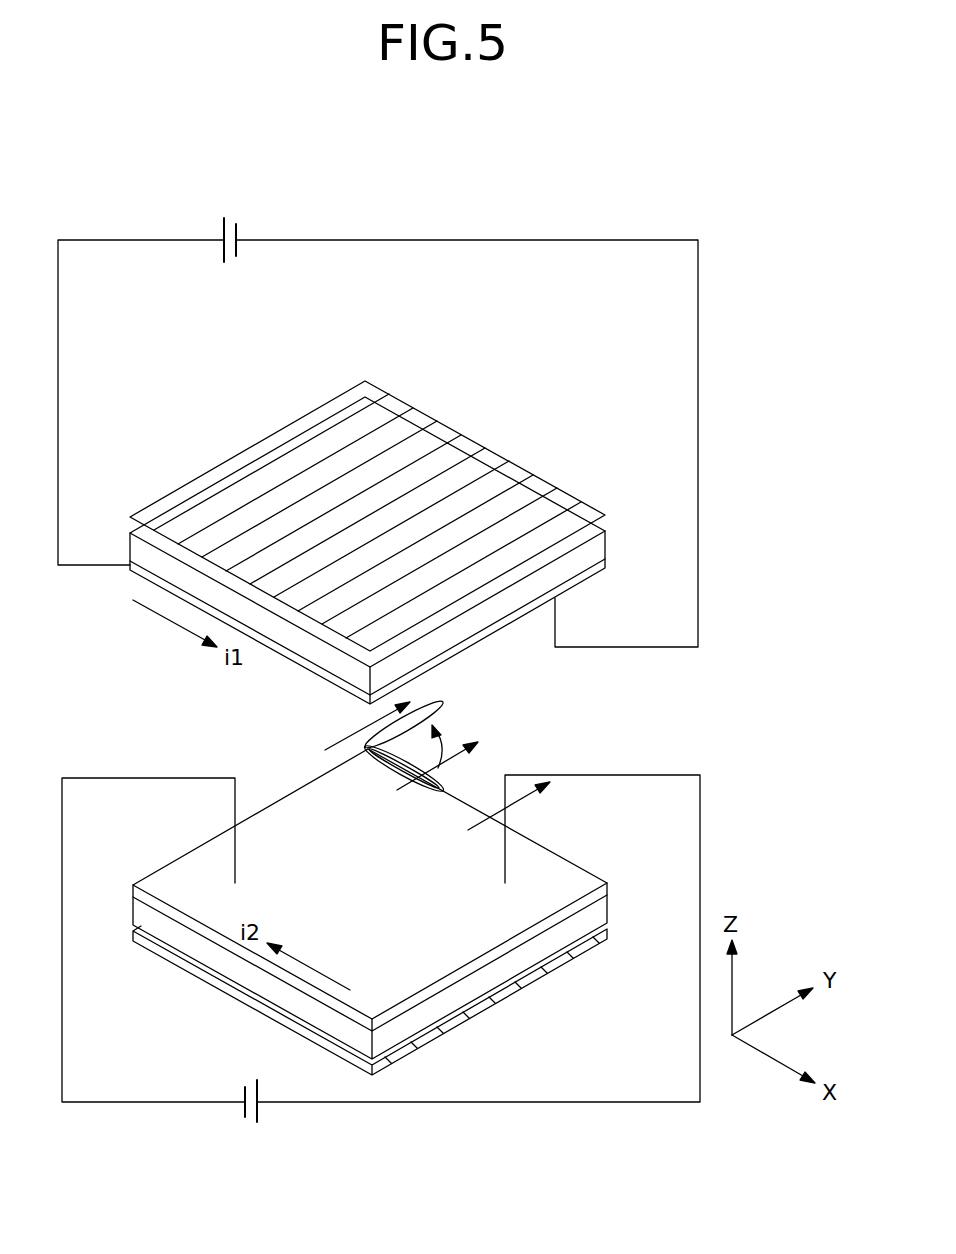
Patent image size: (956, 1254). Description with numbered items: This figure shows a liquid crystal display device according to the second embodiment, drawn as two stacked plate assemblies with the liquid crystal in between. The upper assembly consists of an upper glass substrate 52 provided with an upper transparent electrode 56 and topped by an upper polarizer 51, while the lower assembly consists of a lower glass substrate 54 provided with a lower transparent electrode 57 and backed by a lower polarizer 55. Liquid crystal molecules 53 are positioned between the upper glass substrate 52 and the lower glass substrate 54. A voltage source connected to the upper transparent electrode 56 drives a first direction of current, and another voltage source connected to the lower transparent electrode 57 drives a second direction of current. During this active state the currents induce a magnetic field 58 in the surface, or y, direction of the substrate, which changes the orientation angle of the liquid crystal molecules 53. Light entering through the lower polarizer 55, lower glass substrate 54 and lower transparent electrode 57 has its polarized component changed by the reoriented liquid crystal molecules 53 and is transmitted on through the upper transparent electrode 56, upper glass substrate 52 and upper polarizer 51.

The upper polarizer 51 is at (607, 508).
The upper glass substrate 52 is at (607, 535).
The upper transparent electrode 56 is at (607, 562).
The liquid crystal molecules 53 is at (440, 703).
The magnetic field 58 is at (520, 802).
The lower transparent electrode 57 is at (607, 885).
The lower glass substrate 54 is at (607, 905).
The lower polarizer 55 is at (607, 935).